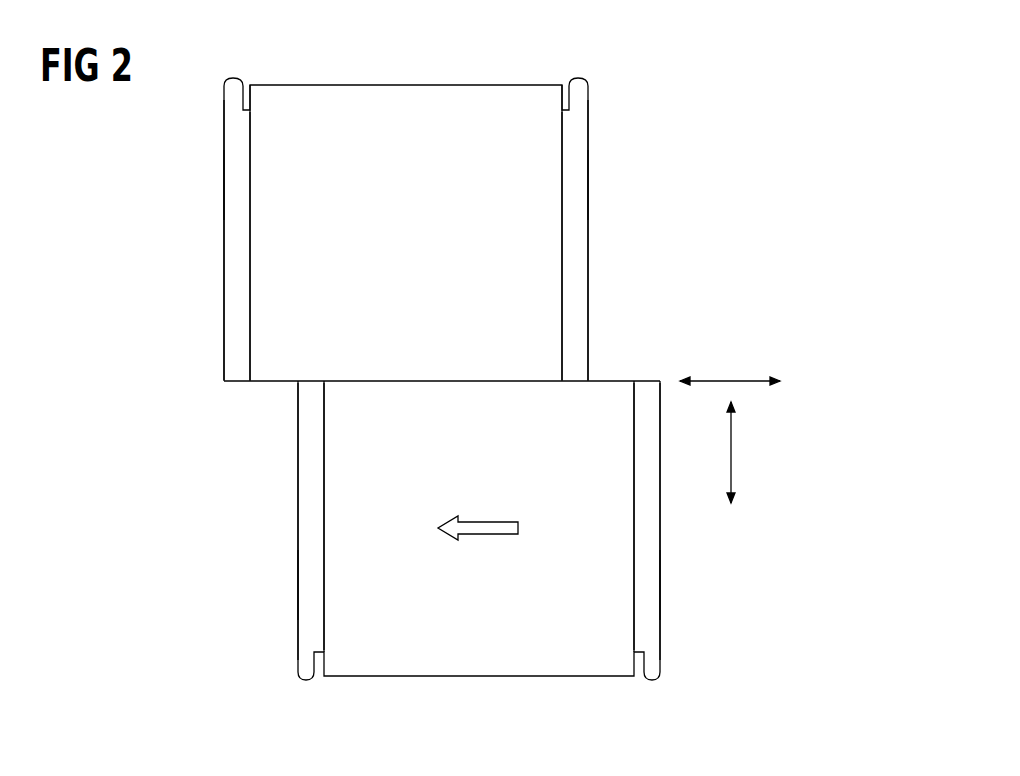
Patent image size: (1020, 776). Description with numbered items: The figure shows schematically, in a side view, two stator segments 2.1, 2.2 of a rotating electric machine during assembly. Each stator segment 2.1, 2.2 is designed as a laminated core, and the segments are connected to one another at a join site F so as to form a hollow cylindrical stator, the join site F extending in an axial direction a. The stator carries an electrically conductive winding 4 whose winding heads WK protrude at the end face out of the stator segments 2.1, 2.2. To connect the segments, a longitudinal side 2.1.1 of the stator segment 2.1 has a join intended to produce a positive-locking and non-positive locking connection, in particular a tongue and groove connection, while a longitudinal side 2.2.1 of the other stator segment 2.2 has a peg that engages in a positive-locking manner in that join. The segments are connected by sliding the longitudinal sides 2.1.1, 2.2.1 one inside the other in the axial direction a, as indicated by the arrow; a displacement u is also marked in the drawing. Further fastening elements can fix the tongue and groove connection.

The stator segment 2.1 is at (582, 660).
The longitudinal side 2.1.1 is at (605, 381).
The stator segment 2.2 is at (497, 99).
The longitudinal side 2.2.1 is at (310, 84).
The electrically conductive winding 4 is at (232, 185).
The join site F is at (430, 381).
The axial direction a is at (730, 365).
The offset u is at (739, 452).